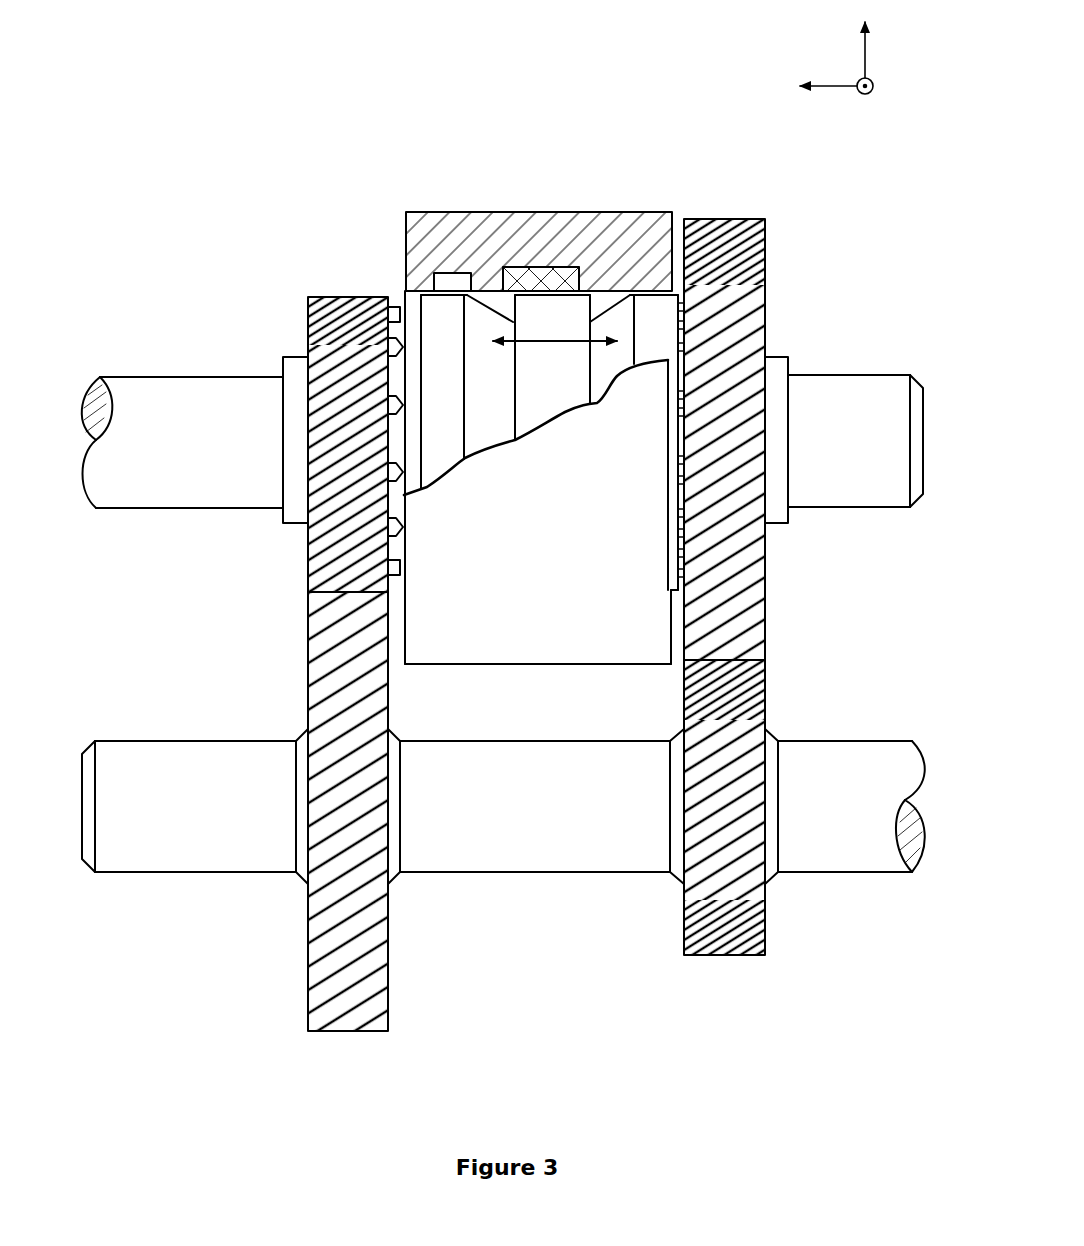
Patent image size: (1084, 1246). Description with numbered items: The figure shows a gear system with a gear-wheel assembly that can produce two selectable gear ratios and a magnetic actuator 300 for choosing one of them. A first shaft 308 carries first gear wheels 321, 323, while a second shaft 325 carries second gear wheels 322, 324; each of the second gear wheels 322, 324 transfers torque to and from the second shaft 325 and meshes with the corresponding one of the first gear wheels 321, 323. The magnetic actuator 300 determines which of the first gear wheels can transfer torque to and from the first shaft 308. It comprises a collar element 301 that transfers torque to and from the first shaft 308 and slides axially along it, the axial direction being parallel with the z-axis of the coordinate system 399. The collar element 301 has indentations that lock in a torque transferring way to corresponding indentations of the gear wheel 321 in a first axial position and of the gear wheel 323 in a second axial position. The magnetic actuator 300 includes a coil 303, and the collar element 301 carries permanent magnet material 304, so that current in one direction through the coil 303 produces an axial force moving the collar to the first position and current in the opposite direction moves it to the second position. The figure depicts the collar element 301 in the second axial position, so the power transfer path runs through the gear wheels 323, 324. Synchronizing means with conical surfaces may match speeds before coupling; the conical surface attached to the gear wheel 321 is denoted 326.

The magnetic actuator 300 is at (467, 212).
The collar element 301 is at (468, 382).
The coil 303 is at (528, 277).
The permanent magnet material 304 is at (530, 382).
The first shaft 308 is at (184, 449).
The first gear wheel 321 is at (308, 318).
The second gear wheel 322 is at (308, 979).
The first gear wheel 323 is at (765, 266).
The second gear wheel 324 is at (765, 920).
The second shaft 325 is at (535, 824).
The conical surface 326 is at (413, 350).
The coordinate system 399 is at (810, 62).